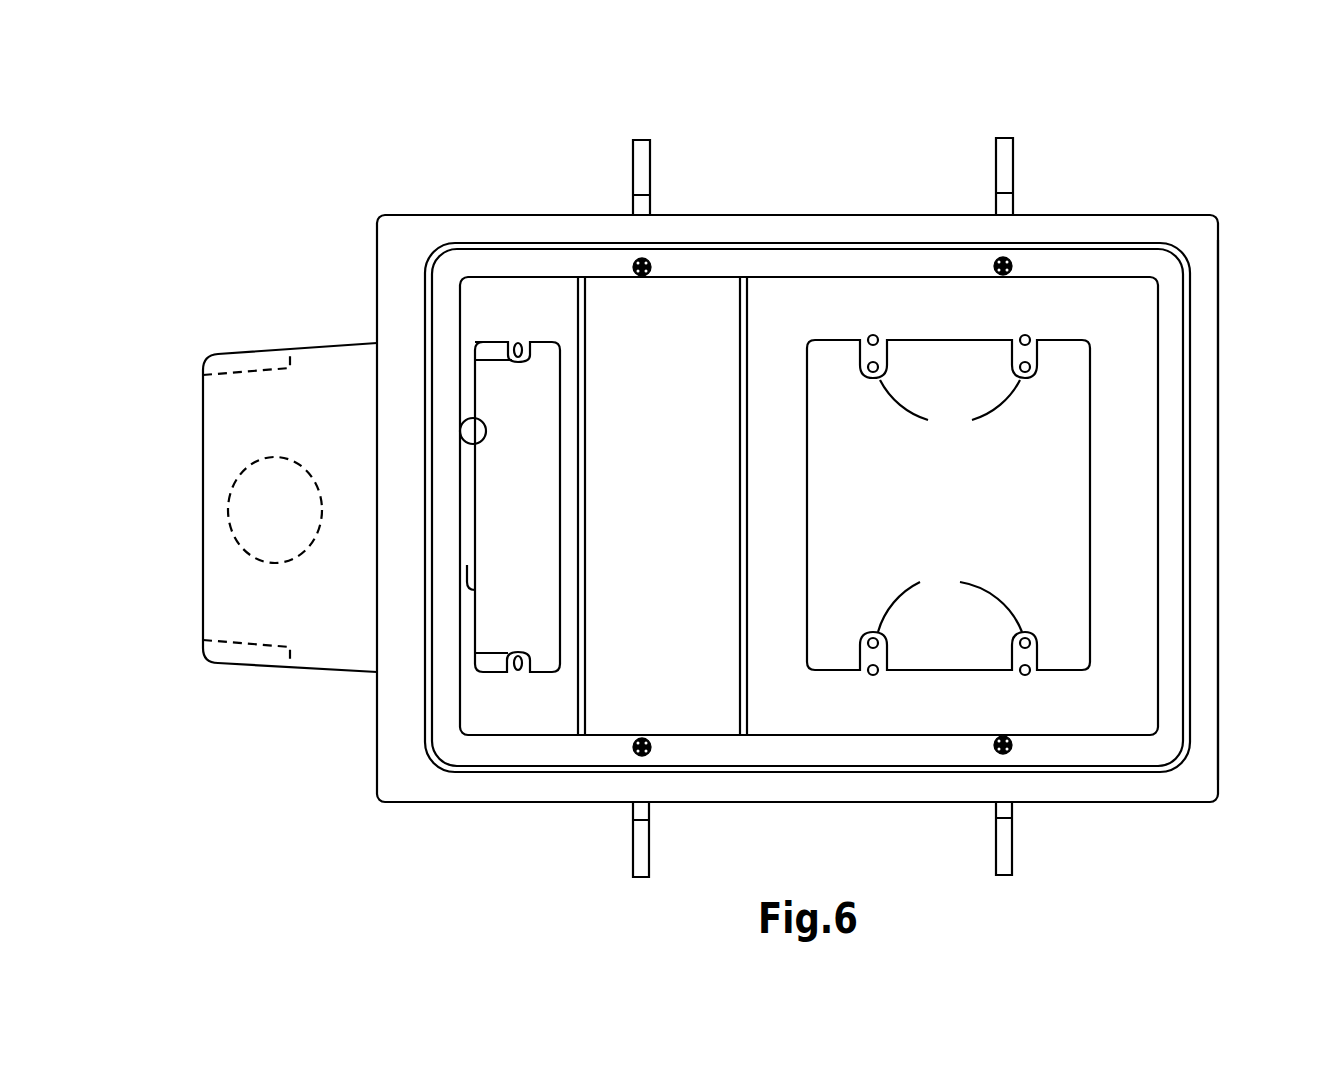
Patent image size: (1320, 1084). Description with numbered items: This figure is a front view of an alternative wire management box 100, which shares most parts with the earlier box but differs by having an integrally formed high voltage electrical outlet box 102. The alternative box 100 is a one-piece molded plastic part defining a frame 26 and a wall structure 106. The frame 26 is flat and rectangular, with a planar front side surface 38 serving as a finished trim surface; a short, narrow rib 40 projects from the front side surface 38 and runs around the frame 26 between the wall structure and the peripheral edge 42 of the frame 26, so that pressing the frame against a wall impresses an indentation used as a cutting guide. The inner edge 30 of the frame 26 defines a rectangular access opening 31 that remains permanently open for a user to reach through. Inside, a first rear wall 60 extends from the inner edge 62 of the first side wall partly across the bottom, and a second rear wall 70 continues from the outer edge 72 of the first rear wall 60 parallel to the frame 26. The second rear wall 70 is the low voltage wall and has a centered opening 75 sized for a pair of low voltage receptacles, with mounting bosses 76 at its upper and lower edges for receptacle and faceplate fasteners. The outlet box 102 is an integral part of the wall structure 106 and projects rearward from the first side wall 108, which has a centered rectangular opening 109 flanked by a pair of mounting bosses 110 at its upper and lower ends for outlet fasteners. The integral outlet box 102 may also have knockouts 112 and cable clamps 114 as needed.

The alternative wire management box 100 is at (842, 124).
The frame 26 is at (405, 243).
The wall structure 106 is at (503, 305).
The peripheral edge 42 is at (645, 153).
The rib 40 is at (1192, 425).
The inner edge 62 is at (584, 543).
The outer edge 72 is at (740, 597).
The first rear wall 60 is at (623, 688).
The inner edge 30 is at (468, 442).
The mounting bosses 110 is at (522, 362).
The access opening 31 is at (462, 520).
The first side wall 108 is at (465, 590).
The opening 109 is at (482, 610).
The front side surface 38 is at (392, 557).
The high voltage electrical outlet box 102 is at (203, 420).
The knockouts 112 is at (268, 502).
The cable clamps 114 is at (243, 350).
The second rear wall 70 is at (837, 697).
The mounting bosses 76 is at (950, 506).
The centered opening 75 is at (941, 662).